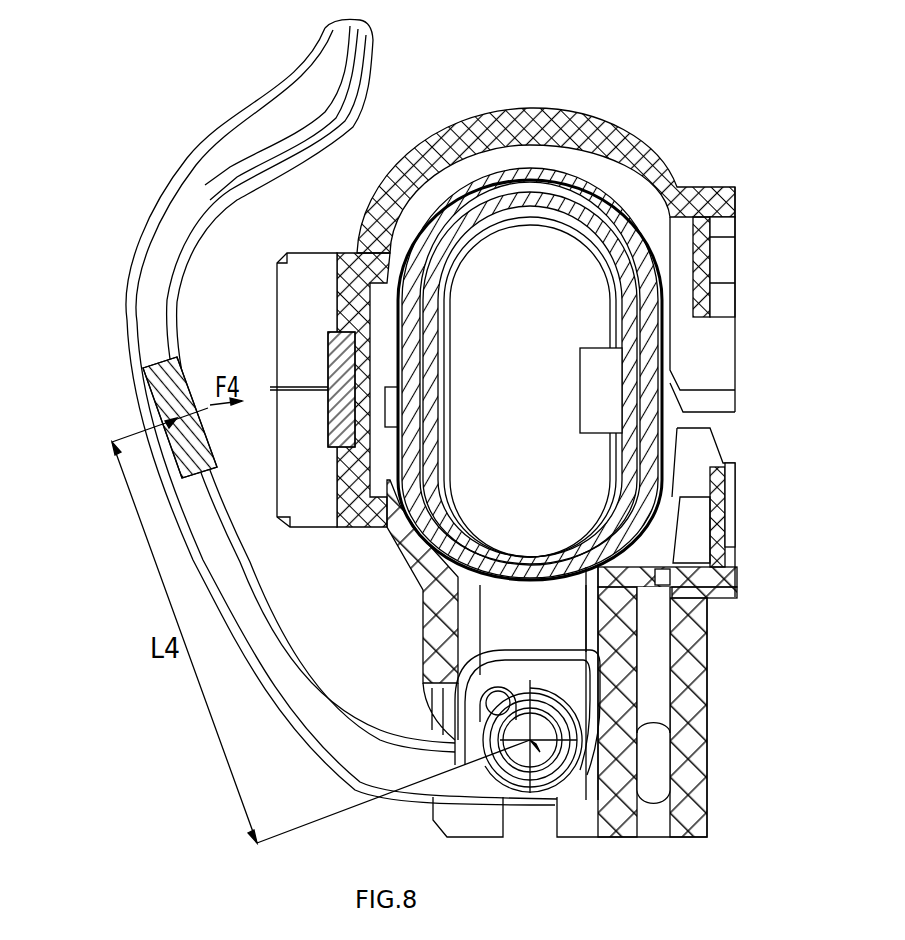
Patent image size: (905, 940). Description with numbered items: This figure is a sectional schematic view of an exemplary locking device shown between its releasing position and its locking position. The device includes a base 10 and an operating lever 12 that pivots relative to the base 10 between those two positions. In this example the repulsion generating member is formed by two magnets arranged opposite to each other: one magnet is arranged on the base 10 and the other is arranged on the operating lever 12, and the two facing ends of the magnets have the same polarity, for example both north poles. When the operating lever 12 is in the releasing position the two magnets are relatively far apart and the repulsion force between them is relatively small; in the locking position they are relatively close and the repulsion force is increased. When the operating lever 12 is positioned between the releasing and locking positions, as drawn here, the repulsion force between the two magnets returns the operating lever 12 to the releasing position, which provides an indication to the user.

The base 10 is at (623, 140).
The operating lever 12 is at (233, 105).